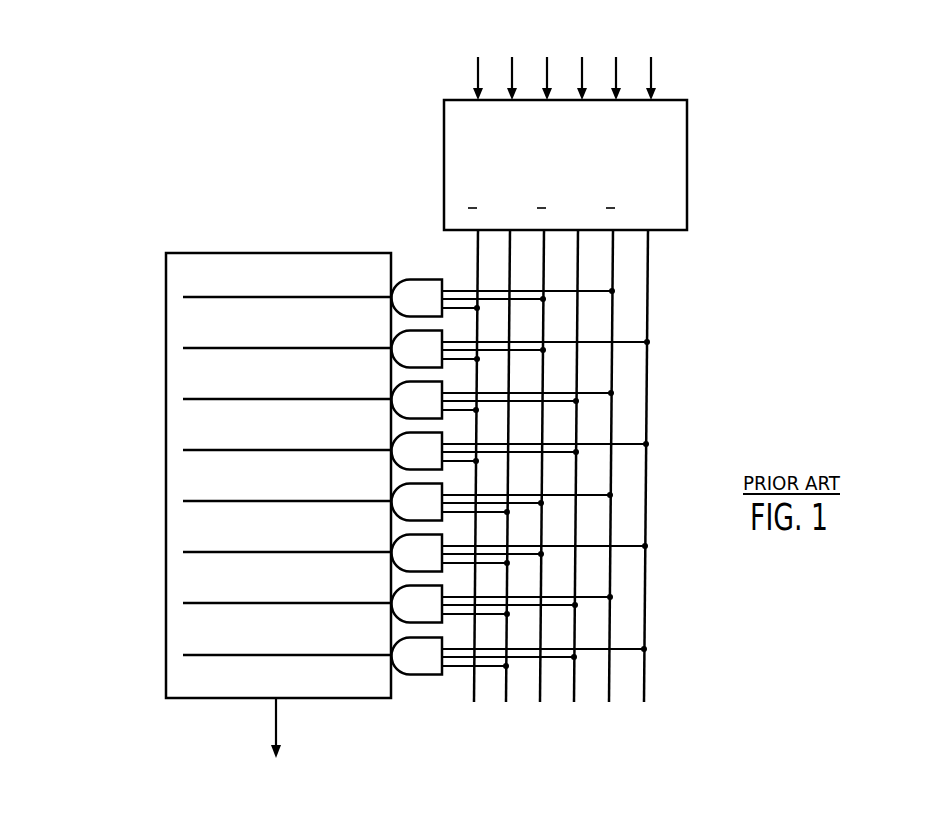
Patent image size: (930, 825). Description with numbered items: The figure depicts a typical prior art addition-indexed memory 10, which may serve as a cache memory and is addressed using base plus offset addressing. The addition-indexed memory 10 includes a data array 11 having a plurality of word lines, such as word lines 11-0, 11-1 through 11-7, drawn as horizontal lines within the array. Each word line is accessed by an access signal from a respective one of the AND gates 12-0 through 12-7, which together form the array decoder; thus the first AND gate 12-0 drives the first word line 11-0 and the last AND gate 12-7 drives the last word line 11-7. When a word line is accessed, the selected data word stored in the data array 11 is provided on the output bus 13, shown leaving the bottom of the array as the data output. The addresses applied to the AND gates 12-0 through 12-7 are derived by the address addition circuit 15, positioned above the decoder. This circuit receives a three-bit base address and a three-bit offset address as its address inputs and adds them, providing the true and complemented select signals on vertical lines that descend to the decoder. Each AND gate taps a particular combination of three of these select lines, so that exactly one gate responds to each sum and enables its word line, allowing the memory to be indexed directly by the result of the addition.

The addition-indexed memory 10 is at (100, 729).
The data array 11 is at (167, 272).
The word line 11-0 is at (362, 262).
The word line 11-1 is at (193, 333).
The word line 11-7 is at (187, 640).
The AND gate 12-0 is at (422, 280).
The AND gate 12-7 is at (405, 670).
The output bus 13 is at (283, 752).
The address addition circuit 15 is at (678, 165).